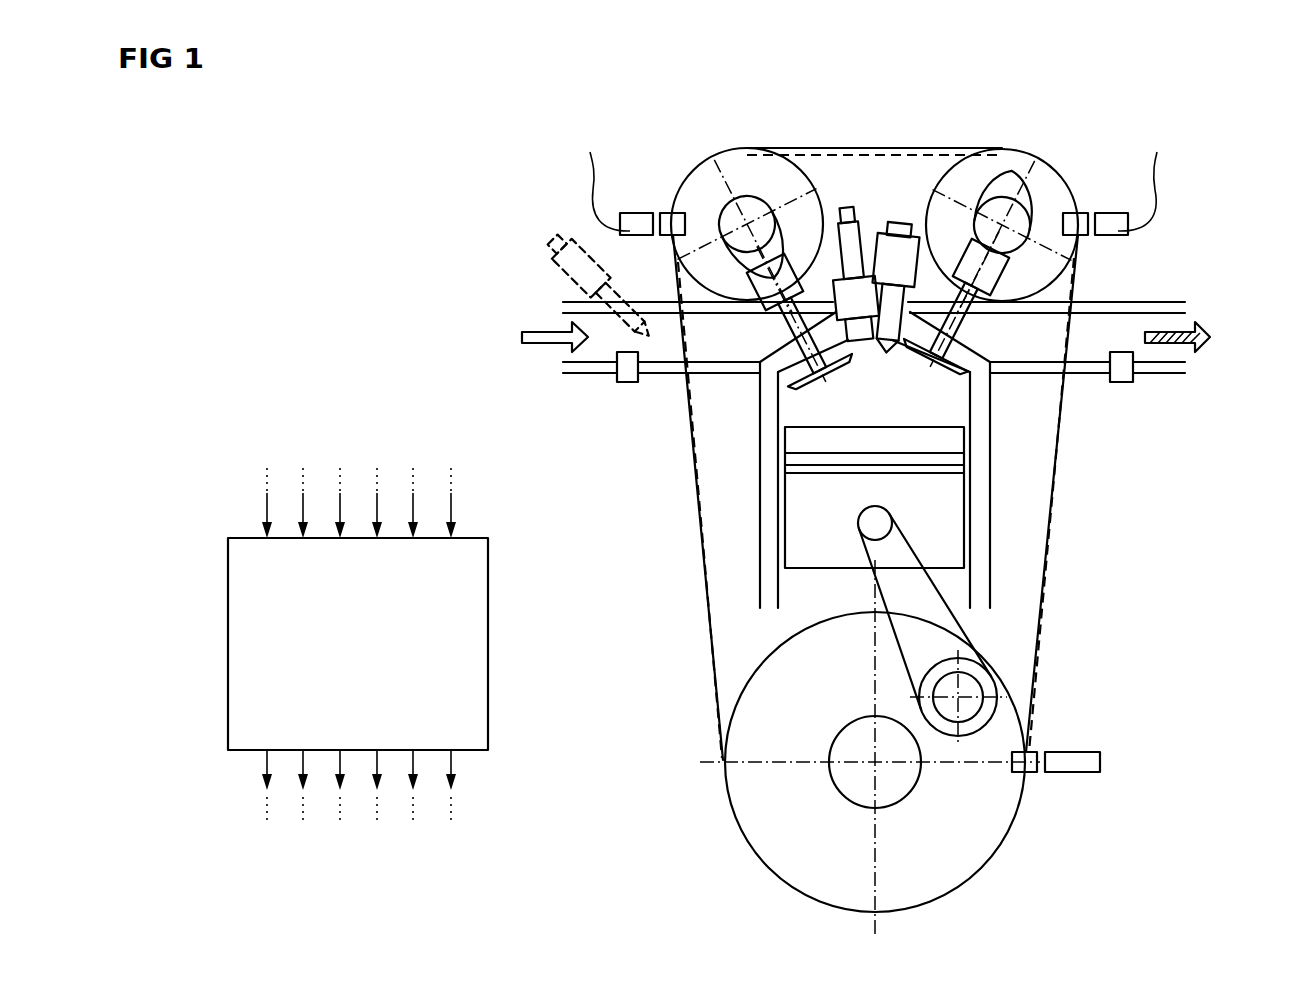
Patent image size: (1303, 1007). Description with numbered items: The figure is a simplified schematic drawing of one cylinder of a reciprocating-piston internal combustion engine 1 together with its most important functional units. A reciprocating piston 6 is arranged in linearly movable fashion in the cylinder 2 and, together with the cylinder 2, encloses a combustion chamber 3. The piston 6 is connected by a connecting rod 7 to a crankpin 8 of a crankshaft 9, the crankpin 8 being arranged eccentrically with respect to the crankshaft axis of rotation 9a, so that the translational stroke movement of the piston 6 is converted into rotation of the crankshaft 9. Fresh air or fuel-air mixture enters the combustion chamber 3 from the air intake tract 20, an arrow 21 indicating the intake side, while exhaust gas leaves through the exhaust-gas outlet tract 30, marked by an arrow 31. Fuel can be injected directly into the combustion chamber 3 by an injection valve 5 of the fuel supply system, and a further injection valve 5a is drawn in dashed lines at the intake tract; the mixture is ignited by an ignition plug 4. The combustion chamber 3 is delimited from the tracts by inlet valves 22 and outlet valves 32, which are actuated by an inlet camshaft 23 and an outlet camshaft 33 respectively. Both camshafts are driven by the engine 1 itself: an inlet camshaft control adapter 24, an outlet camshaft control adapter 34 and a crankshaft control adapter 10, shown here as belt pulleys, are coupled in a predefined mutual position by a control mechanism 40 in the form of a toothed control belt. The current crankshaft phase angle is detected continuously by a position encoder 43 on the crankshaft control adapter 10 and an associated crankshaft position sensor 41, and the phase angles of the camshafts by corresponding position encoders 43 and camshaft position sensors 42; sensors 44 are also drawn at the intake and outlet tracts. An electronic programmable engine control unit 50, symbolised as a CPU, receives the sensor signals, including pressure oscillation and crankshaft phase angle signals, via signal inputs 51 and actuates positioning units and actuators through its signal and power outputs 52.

The internal combustion engine 1 is at (1036, 120).
The cylinder 2 is at (768, 513).
The combustion chamber 3 is at (870, 407).
The ignition plug 4 is at (857, 298).
The injection valve 5 is at (898, 248).
The port fuel injector (alternative position) 5a is at (566, 248).
The reciprocating piston 6 is at (935, 445).
The connecting rod 7 is at (940, 635).
The crankpin 8 is at (968, 688).
The crankshaft 9 is at (893, 780).
The crankshaft axis of rotation 9a is at (847, 797).
The crankshaft control adapter 10 is at (815, 833).
The air intake tract 20 is at (597, 330).
The intake air flow 21 is at (552, 338).
The inlet valves 22 is at (790, 385).
The inlet camshaft 23 is at (720, 217).
The inlet camshaft control adapter 24 is at (745, 178).
The exhaust-gas outlet tract 30 is at (1045, 325).
The exhaust gas flow 31 is at (1205, 340).
The outlet valves 32 is at (945, 385).
The outlet camshaft 33 is at (1017, 217).
The outlet camshaft control adapter 34 is at (985, 175).
The control mechanism 40 is at (873, 153).
The crankshaft position sensor 41 is at (1090, 773).
The camshaft position sensors 42 is at (622, 230).
The position encoder 43 is at (672, 213).
The duct sensor 44 is at (625, 383).
The engine control unit 50 is at (488, 660).
The signal inputs 51 is at (332, 448).
The output signals 52 is at (358, 838).